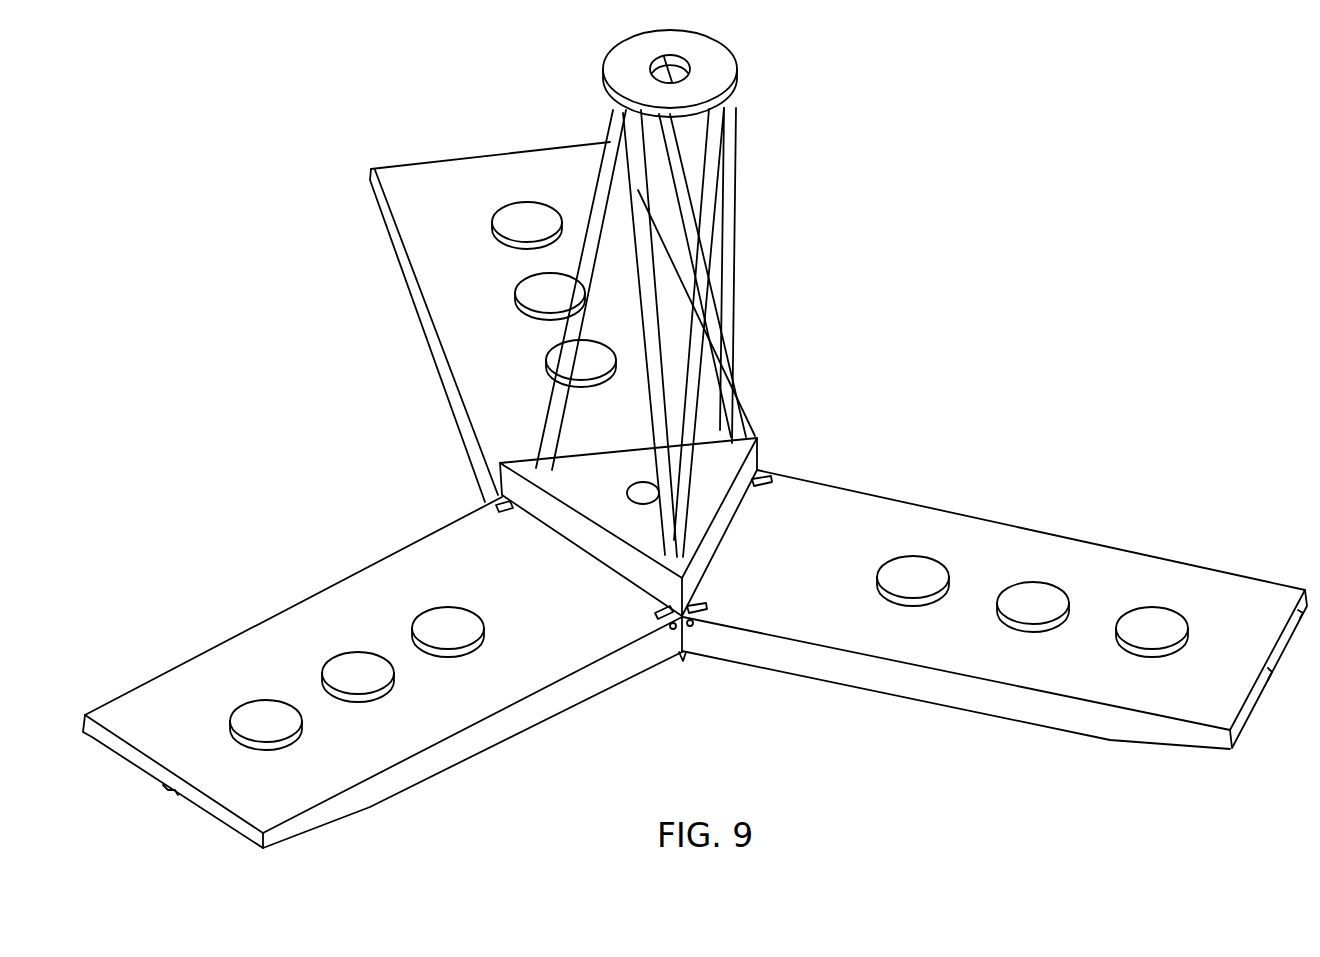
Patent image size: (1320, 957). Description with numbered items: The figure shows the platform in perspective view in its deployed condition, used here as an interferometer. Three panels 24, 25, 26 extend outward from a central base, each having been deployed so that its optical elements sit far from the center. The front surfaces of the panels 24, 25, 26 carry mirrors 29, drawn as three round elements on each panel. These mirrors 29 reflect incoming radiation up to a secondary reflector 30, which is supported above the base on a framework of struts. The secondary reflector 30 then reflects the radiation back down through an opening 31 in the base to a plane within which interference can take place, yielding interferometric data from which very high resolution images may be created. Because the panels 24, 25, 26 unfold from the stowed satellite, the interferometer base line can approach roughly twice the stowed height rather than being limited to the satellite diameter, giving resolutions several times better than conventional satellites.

The panel 24 is at (418, 300).
The panel 25 is at (372, 566).
The panel 26 is at (901, 501).
The mirrors 29 is at (547, 362).
The secondary reflector 30 is at (738, 77).
The opening 31 is at (633, 496).